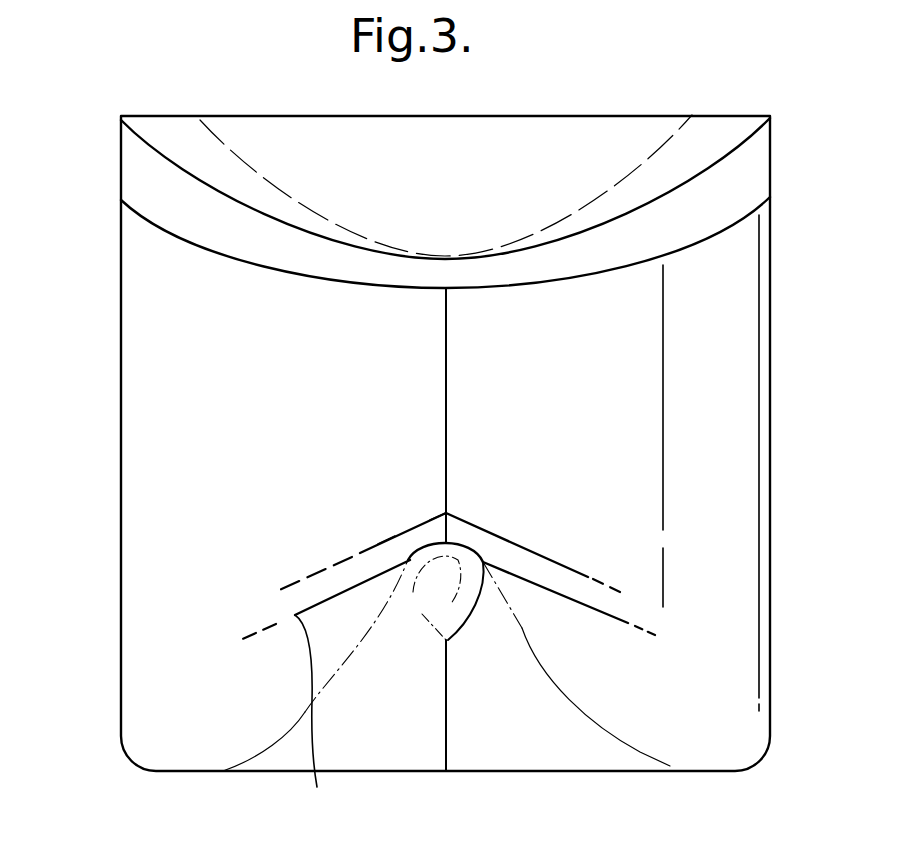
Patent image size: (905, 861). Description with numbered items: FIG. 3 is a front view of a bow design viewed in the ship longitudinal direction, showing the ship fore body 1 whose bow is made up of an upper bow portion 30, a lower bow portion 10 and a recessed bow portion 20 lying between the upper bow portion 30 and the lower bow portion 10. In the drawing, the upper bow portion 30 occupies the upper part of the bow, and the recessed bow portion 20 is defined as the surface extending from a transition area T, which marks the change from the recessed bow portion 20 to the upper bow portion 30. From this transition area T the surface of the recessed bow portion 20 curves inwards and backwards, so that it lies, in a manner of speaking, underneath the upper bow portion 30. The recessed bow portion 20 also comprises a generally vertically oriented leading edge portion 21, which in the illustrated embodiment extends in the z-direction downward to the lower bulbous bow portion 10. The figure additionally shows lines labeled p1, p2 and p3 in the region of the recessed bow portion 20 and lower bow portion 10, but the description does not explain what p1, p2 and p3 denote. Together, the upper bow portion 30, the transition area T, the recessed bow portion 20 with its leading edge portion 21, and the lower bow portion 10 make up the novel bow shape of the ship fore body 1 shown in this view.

The ship fore body 1 is at (92, 152).
The lower bow portion 10 is at (439, 588).
The recessed bow portion 20 is at (487, 550).
The leading edge portion 21 is at (453, 530).
The upper bow portion 30 is at (446, 430).
The transition area T is at (446, 513).
The first plane line p1 is at (314, 722).
The second plane line p2 is at (446, 513).
The third plane line p3 is at (378, 544).